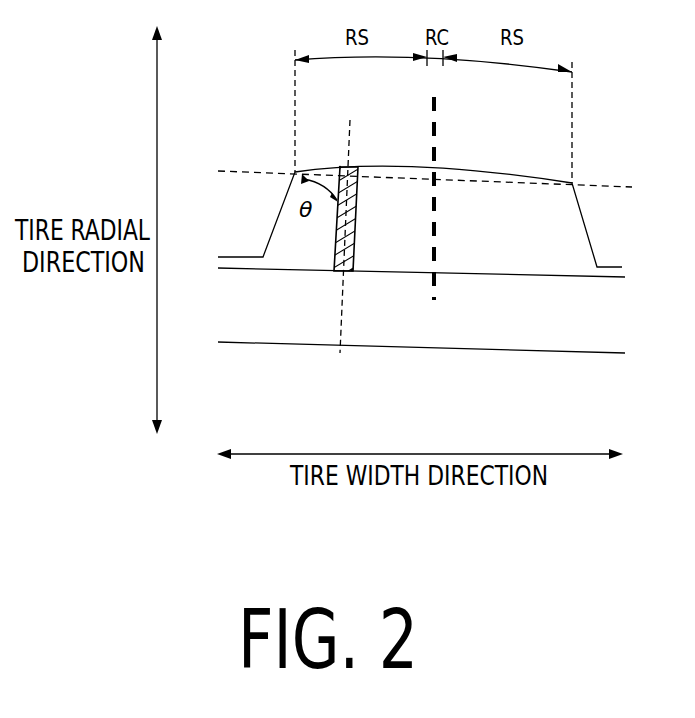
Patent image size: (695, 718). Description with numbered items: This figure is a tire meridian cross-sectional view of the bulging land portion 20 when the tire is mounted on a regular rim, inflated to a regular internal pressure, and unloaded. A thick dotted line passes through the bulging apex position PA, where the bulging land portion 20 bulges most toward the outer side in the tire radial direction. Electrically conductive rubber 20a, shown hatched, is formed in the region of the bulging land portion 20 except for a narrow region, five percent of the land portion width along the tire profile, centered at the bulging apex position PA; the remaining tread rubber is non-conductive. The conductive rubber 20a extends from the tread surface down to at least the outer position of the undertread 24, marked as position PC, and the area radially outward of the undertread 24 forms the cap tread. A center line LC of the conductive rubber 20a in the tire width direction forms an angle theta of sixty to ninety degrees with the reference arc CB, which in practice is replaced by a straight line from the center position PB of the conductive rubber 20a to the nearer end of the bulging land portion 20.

The bulging land portion 20 is at (517, 239).
The electrically conductive rubber 20a is at (358, 188).
The undertread 24 is at (517, 327).
The reference arc CB is at (599, 183).
The center line LC is at (350, 226).
The bulging apex position PA is at (436, 166).
The center position PB is at (340, 167).
The outer position of the undertread PC is at (352, 270).